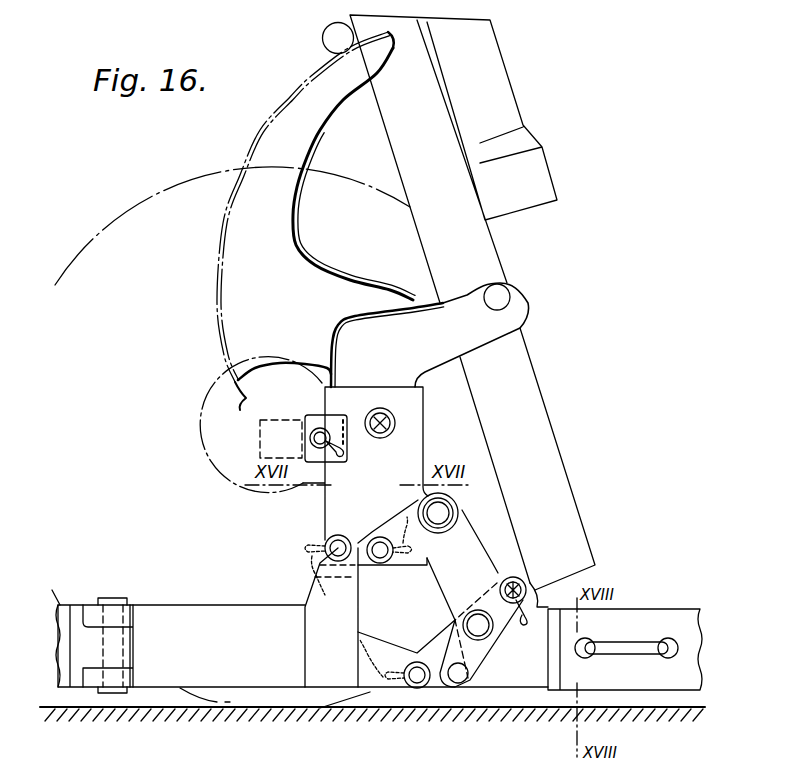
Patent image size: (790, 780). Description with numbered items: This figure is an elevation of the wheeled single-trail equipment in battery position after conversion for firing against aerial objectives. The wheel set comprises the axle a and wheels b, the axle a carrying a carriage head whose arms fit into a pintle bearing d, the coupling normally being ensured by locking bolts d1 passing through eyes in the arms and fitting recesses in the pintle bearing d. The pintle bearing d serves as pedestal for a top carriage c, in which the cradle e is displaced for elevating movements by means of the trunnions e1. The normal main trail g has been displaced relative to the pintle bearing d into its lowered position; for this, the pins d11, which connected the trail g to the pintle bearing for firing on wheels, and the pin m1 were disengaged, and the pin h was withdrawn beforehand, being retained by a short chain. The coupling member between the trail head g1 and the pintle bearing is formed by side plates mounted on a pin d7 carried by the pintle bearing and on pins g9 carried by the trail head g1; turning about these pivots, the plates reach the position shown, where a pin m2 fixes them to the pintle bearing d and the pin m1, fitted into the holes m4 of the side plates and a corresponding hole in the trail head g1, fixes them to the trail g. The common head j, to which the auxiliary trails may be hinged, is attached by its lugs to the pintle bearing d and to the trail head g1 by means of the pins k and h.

The axle a is at (268, 437).
The wheels b is at (223, 177).
The top carriage c is at (518, 316).
The pintle bearing d is at (408, 453).
The locking bolts d1 is at (317, 432).
The pin d7 is at (446, 516).
The pins d11 is at (395, 423).
The cradle e is at (538, 431).
The trunnions e1 is at (495, 291).
The main trail g is at (655, 614).
The trail head g1 is at (523, 673).
The pins g9 is at (478, 625).
The pin h is at (417, 690).
The head j is at (230, 612).
The pin k is at (330, 544).
The pin m1 is at (520, 585).
The pin m2 is at (386, 530).
The holes m4 is at (458, 680).